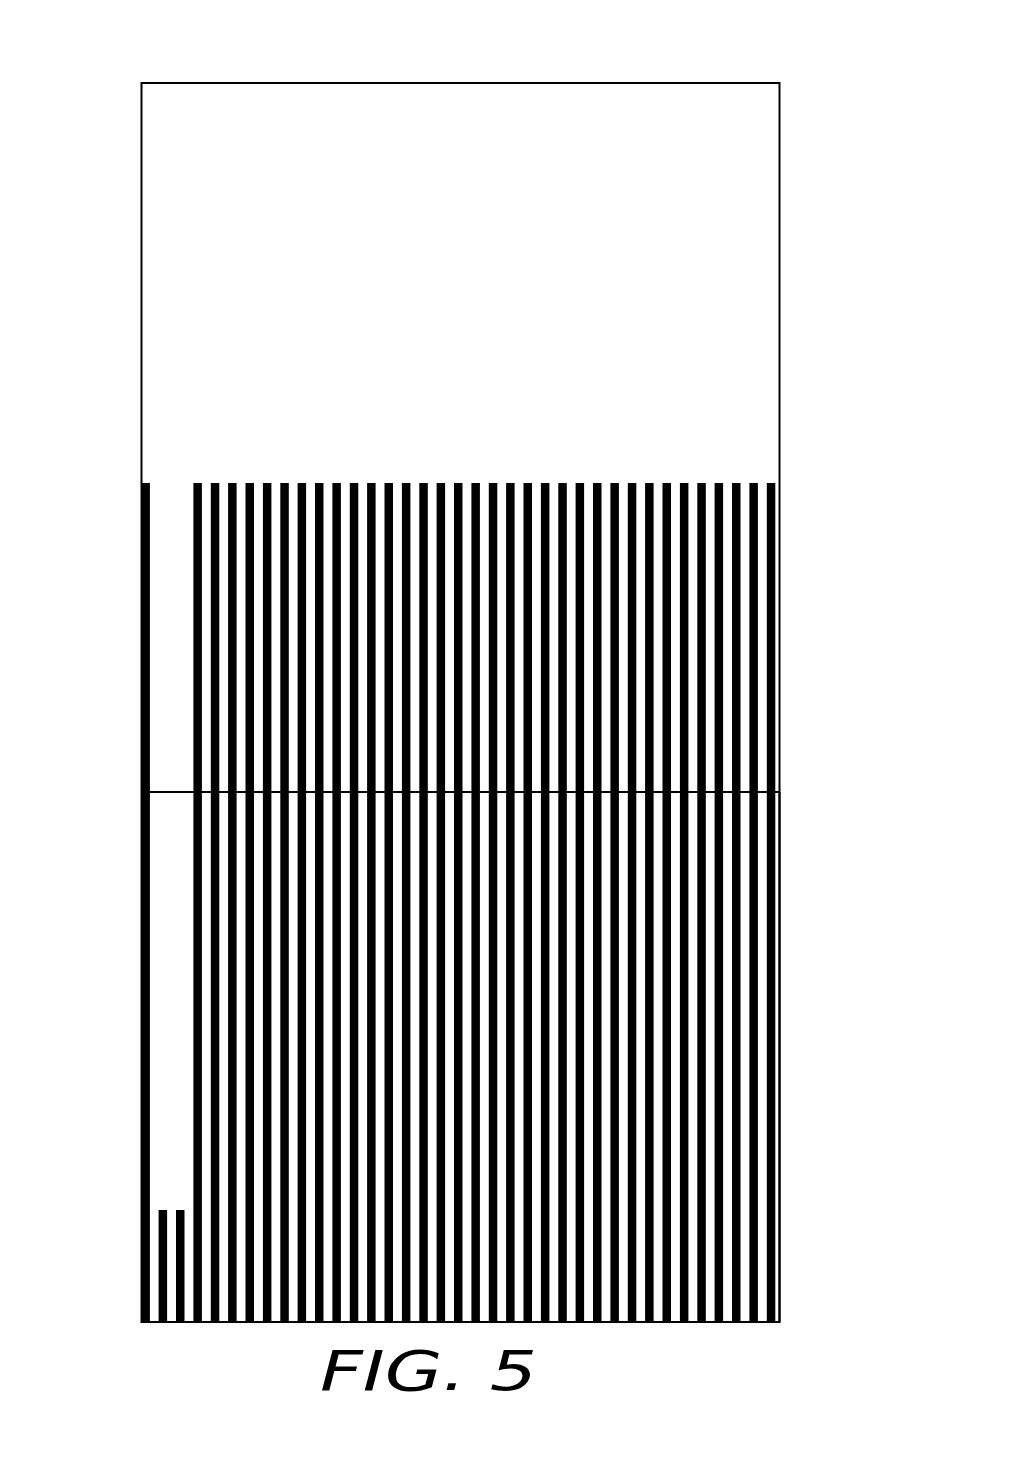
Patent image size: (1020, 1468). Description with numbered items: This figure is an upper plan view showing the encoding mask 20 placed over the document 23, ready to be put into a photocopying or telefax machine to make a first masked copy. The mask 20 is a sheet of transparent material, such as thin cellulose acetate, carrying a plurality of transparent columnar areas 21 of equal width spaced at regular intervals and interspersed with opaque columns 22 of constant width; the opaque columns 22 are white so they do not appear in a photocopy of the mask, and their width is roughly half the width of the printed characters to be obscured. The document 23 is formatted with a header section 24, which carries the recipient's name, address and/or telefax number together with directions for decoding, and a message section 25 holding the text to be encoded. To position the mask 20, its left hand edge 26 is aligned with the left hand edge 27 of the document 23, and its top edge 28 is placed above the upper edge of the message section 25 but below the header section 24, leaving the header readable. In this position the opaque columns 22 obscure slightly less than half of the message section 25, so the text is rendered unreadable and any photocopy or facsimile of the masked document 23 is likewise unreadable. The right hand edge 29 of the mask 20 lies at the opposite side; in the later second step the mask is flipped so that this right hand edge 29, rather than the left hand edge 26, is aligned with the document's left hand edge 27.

The encoding mask 20 is at (781, 710).
The transparent columnar areas 21 is at (207, 1323).
The opaque columns 22 is at (162, 1322).
The document 23 is at (610, 82).
The header section 24 is at (140, 81).
The message section 25 is at (203, 751).
The left hand edge of mask 26 is at (141, 870).
The left hand edge of document 27 is at (141, 446).
The top edge of mask 28 is at (736, 483).
The right hand edge of mask 29 is at (780, 1005).